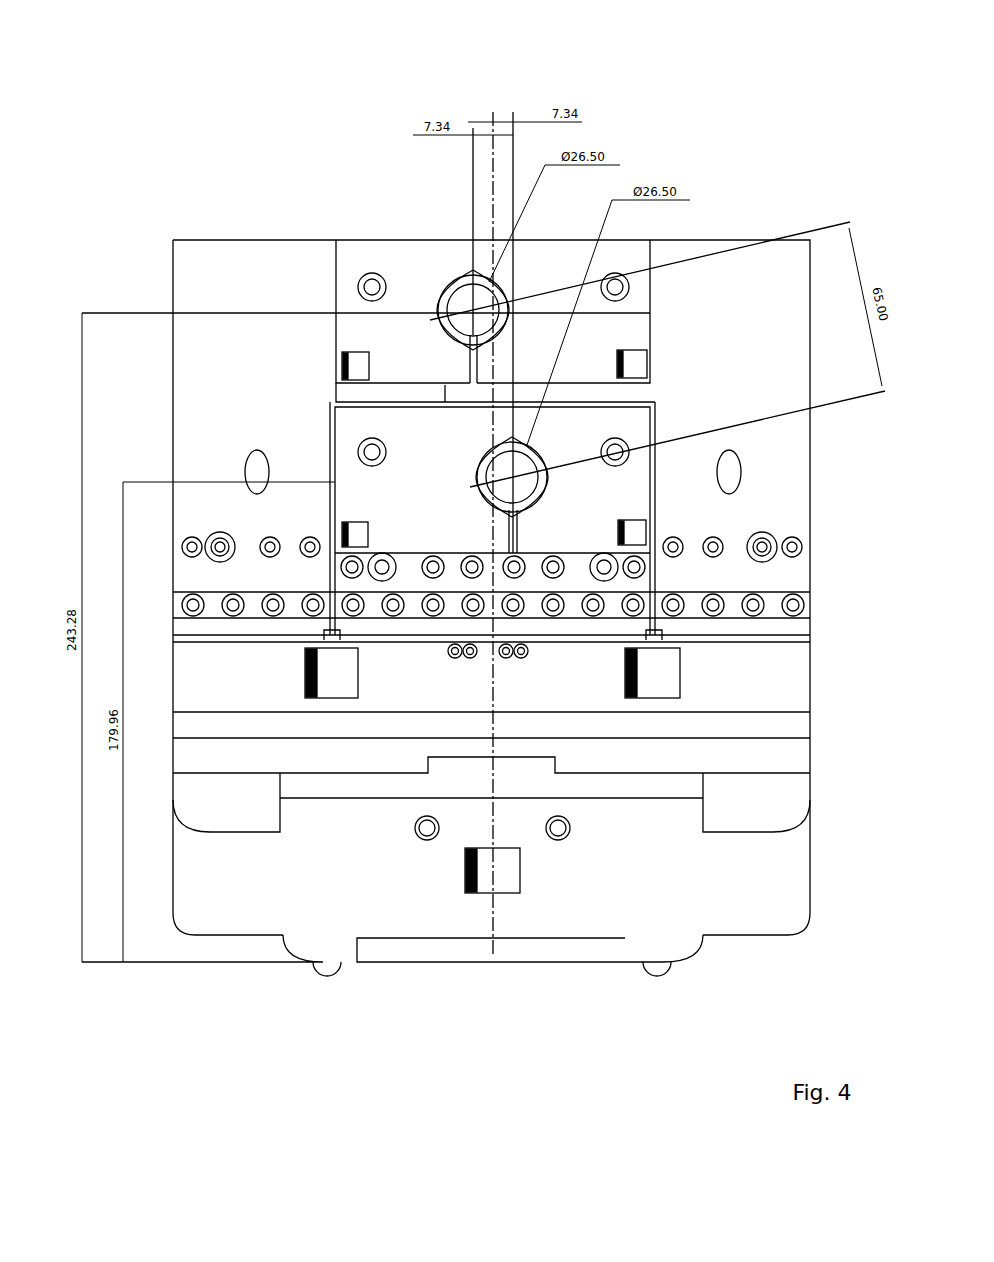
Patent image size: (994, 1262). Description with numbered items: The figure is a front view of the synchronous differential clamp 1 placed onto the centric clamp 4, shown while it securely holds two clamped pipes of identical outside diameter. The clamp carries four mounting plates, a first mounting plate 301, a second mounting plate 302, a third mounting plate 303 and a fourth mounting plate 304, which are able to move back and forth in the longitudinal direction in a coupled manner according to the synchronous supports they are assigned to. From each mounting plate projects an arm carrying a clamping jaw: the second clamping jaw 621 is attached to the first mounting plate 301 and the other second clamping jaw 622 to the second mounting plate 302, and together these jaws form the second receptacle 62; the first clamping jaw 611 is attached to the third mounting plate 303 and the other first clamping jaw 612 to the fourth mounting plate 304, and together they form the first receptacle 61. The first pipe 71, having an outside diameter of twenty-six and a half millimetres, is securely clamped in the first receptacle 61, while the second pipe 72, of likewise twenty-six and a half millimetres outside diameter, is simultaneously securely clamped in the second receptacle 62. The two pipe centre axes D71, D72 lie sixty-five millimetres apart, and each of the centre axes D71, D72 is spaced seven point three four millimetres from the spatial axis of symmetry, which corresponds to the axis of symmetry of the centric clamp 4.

The synchronous differential clamp 1 is at (622, 135).
The centric clamp 4 is at (602, 883).
The first receptacle 61 is at (585, 532).
The second receptacle 62 is at (583, 310).
The first pipe 71 is at (482, 455).
The second pipe 72 is at (460, 338).
The first mounting plate 301 is at (578, 625).
The second mounting plate 302 is at (403, 625).
The third mounting plate 303 is at (728, 623).
The fourth mounting plate 304 is at (222, 627).
The first clamping jaw 611 is at (575, 490).
The first clamping jaw 612 is at (425, 447).
The second clamping jaw 621 is at (620, 255).
The second clamping jaw 622 is at (413, 268).
The centre axis of the first pipe D71 is at (510, 462).
The centre axis of the second pipe D72 is at (440, 294).